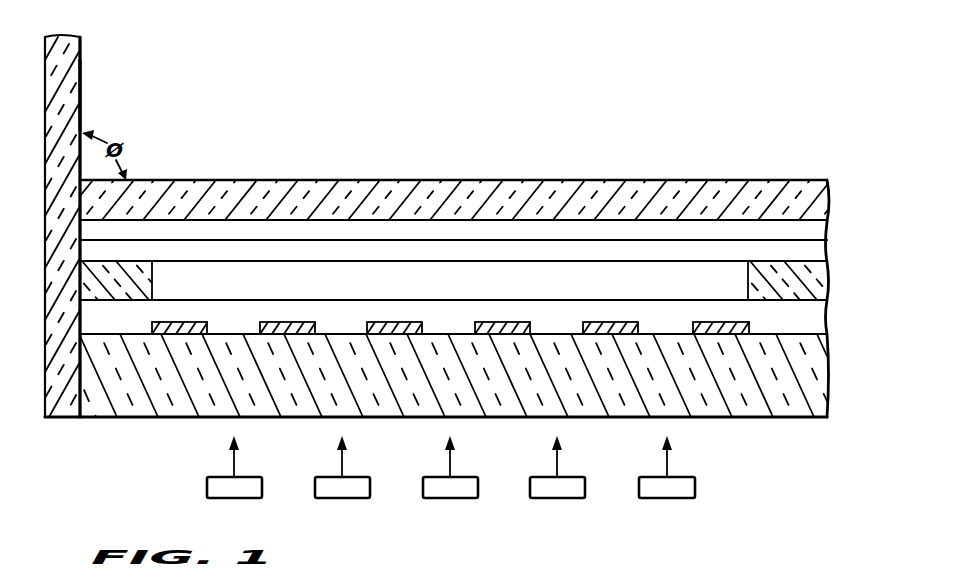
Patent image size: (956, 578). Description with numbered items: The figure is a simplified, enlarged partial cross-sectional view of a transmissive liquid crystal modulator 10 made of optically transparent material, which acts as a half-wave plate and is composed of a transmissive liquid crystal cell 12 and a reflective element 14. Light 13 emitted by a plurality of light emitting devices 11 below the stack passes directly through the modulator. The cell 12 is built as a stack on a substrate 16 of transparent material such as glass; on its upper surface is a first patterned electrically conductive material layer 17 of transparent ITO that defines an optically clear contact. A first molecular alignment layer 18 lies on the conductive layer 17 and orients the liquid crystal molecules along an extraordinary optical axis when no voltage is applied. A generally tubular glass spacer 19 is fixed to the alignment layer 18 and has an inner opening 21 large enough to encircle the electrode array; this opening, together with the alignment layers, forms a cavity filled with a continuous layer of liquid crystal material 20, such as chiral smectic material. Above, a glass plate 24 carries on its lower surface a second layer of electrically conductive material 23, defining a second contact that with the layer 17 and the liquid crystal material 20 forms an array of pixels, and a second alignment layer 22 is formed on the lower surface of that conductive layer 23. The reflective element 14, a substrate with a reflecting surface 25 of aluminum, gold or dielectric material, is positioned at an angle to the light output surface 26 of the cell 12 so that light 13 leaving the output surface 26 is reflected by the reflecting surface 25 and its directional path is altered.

The transmissive liquid crystal modulator 10 is at (785, 485).
The light emitting devices 11 is at (344, 499).
The transmissive liquid crystal cell 12 is at (757, 115).
The light 13 is at (338, 463).
The reflective element 14 is at (110, 37).
The substrate 16 is at (829, 380).
The first patterned electrically conductive material layer 17 is at (152, 327).
The first molecular alignment layer 18 is at (829, 327).
The tubular glass spacer 19 is at (829, 290).
The liquid crystal material 20 is at (358, 292).
The inner opening 21 is at (578, 292).
The second alignment layer 22 is at (829, 262).
The second layer of electrically conductive material 23 is at (829, 234).
The glass plate 24 is at (829, 207).
The reflecting surface 25 is at (82, 99).
The light output surface 26 is at (534, 180).